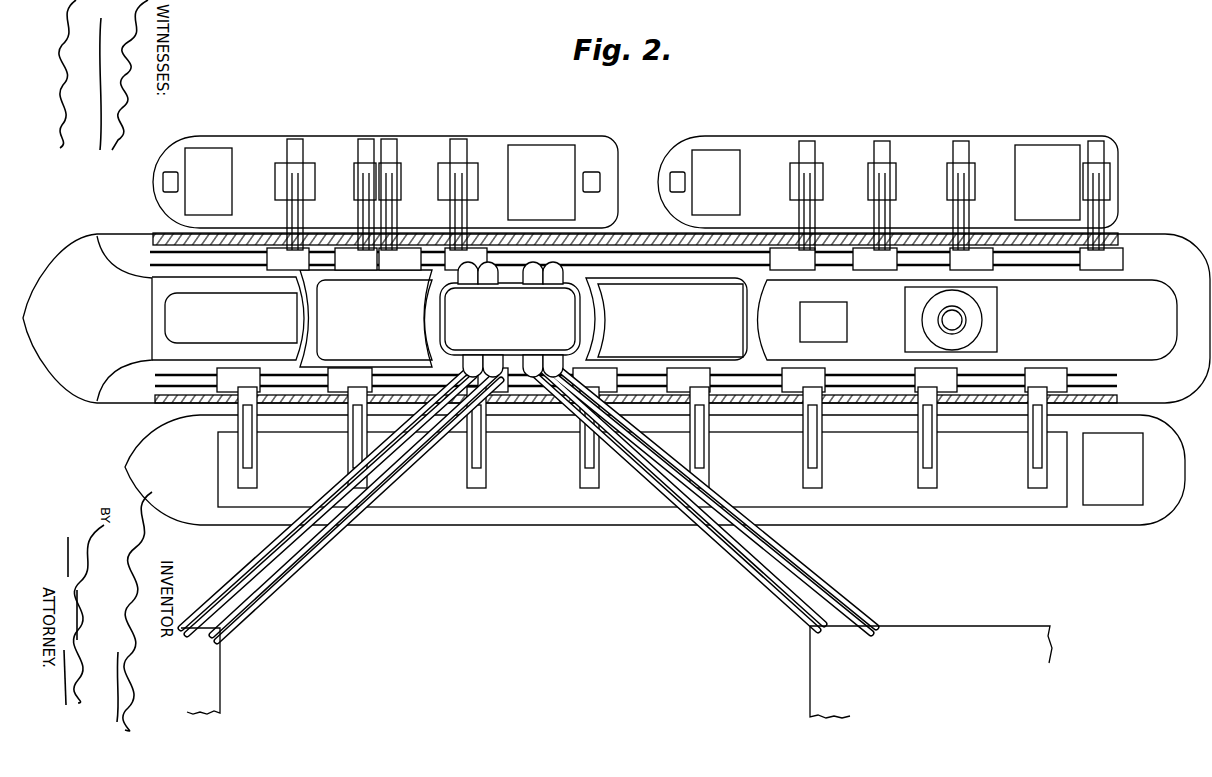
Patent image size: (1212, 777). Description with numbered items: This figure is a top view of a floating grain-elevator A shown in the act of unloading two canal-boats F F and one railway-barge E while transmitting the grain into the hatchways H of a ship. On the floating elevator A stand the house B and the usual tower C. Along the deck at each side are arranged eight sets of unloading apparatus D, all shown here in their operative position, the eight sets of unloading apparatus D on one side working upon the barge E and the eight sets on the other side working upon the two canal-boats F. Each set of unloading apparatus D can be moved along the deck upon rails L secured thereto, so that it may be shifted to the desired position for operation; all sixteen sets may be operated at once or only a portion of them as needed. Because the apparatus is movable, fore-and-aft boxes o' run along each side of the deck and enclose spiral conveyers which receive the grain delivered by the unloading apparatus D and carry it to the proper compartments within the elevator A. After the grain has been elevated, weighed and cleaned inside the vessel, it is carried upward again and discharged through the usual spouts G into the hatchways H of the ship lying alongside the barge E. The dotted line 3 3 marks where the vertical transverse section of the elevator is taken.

The floating grain-elevator A is at (616, 318).
The house B is at (973, 319).
The tower C is at (510, 319).
The unloading apparatus D is at (674, 313).
The barge E is at (655, 470).
The canal-boats F is at (546, 136).
The spouts G is at (390, 466).
The hatchways H is at (616, 672).
The rails L is at (158, 262).
The boxes o' is at (650, 308).
The section line 3 3 is at (458, 139).